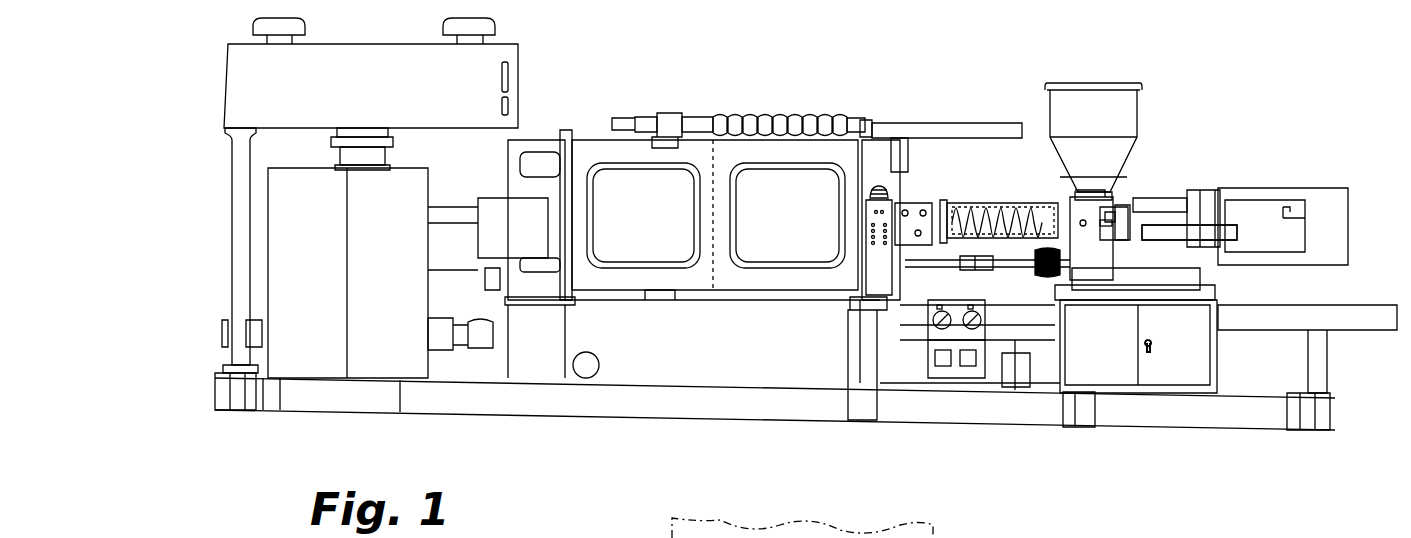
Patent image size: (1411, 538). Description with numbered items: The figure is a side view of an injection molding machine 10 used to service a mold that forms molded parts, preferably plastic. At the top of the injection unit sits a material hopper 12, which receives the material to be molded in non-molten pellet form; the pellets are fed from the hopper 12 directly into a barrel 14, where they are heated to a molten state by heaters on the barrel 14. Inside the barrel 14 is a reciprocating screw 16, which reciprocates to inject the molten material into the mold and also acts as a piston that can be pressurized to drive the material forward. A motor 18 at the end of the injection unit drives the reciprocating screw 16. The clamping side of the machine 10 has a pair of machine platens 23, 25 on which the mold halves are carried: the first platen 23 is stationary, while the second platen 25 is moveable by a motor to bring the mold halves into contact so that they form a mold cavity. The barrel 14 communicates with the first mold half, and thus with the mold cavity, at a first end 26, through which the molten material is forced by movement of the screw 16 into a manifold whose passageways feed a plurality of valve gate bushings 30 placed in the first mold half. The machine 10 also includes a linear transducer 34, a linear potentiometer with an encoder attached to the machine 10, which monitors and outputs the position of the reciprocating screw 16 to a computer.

The injection molding machine 10 is at (180, 67).
The material hopper 12 is at (1105, 105).
The barrel 14 is at (988, 190).
The reciprocating screw 16 is at (968, 215).
The motor 18 is at (1300, 188).
The first platen 23 is at (883, 138).
The second platen 25 is at (650, 118).
The first end 26 is at (957, 235).
The valve gate bushings 30 is at (985, 537).
The linear transducer 34 is at (1210, 250).